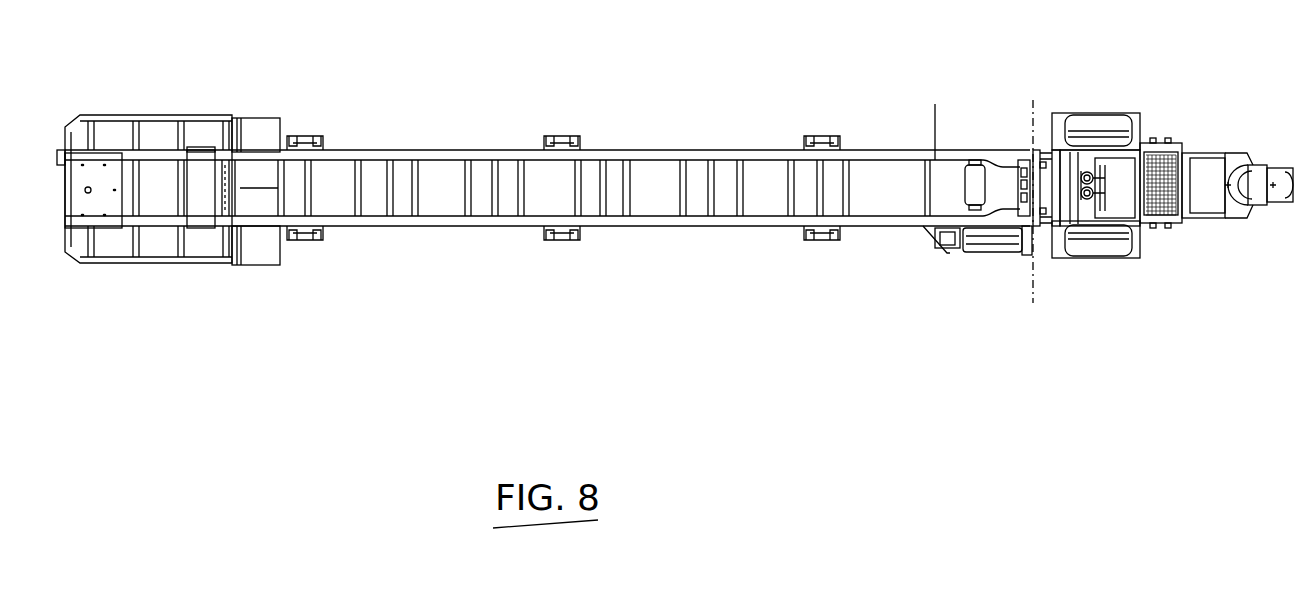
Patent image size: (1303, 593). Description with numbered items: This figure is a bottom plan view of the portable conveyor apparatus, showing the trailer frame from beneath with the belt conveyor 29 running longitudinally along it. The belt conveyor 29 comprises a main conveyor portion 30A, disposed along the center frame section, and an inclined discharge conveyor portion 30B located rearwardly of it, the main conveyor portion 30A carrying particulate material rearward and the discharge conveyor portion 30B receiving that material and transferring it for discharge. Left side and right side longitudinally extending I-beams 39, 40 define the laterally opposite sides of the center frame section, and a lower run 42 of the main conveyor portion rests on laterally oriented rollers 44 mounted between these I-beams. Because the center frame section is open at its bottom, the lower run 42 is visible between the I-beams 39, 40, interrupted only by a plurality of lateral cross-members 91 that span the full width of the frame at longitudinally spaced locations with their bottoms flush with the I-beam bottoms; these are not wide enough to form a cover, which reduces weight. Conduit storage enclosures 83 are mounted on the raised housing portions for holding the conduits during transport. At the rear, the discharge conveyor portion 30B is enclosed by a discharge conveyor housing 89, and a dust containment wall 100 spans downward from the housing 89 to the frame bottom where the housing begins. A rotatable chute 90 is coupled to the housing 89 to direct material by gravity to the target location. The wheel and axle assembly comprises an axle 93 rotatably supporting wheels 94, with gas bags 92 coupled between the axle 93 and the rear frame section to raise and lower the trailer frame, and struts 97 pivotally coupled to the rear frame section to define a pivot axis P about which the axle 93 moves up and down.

The main conveyor portion 30A is at (347, 162).
The inclined discharge conveyor portion 30B is at (1012, 166).
The left side longitudinally extending I-beam 39 is at (650, 150).
The right side longitudinally extending I-beam 40 is at (643, 228).
The lower run 42 is at (438, 173).
The laterally oriented rollers 44 is at (605, 203).
The conduit storage enclosures 83 is at (591, 145).
The discharge conveyor housing 89 is at (953, 170).
The lateral cross-members 91 is at (626, 166).
The dust containment wall 100 is at (935, 167).
The belt conveyor 29 is at (900, 213).
The pivot axis P is at (1038, 280).
The struts 97 is at (1063, 210).
The wheels 94 is at (1112, 113).
The axle 93 is at (1113, 155).
The gas bags 92 is at (1083, 167).
The rotatable chute 90 is at (1267, 213).